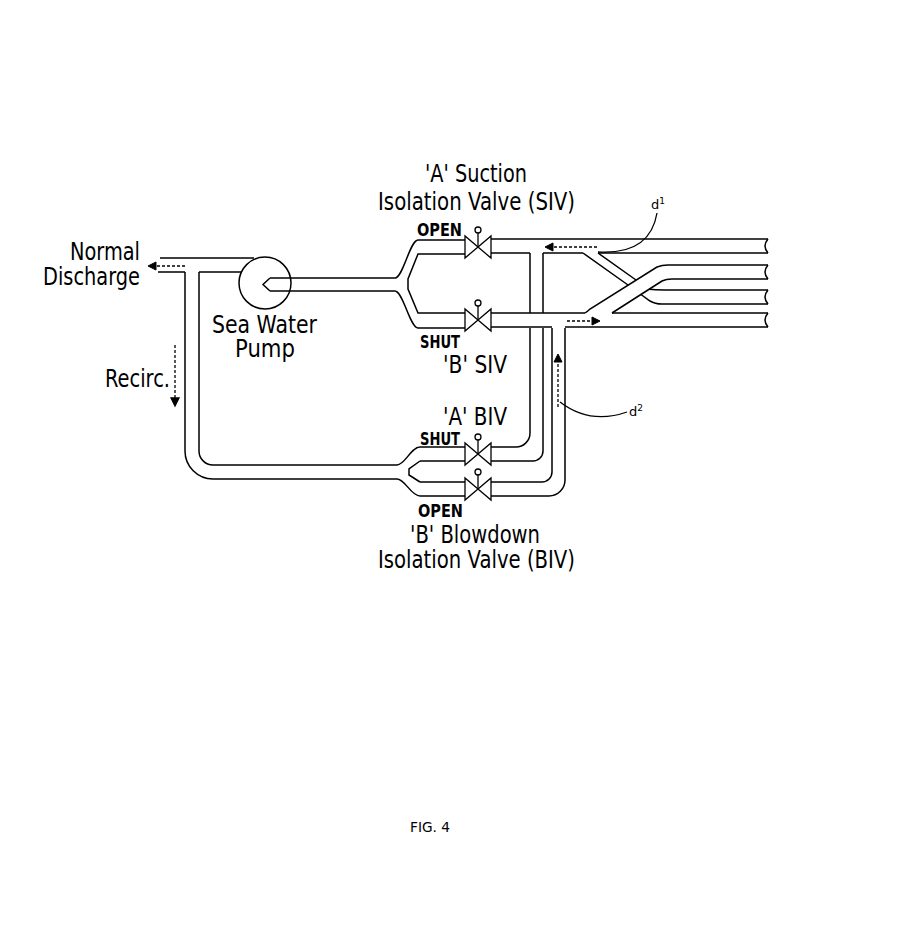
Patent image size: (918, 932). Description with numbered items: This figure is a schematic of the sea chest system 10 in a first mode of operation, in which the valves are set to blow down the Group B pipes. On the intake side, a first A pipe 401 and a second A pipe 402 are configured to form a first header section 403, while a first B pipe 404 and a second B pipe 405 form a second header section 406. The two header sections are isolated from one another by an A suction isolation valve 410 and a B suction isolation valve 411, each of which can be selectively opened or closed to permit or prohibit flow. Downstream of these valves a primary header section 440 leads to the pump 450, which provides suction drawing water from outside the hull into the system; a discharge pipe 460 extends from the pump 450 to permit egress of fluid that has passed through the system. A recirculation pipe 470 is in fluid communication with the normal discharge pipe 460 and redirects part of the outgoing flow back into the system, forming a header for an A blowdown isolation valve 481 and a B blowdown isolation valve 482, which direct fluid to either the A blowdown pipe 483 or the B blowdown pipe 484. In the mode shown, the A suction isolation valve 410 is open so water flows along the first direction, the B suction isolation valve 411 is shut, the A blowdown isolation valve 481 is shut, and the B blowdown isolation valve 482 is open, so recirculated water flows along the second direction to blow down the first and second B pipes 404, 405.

The sea chest system 10 is at (420, 121).
The first A pipe 401 is at (789, 248).
The second A pipe 402 is at (789, 297).
The first header section 403 is at (579, 239).
The first B pipe 404 is at (789, 270).
The second B pipe 405 is at (789, 320).
The second header section 406 is at (570, 328).
The A Suction Isolation Valve 410 is at (473, 253).
The B Suction Isolation Valve 411 is at (473, 312).
The primary header section 440 is at (325, 278).
The pump 450 is at (268, 258).
The discharge pipe 460 is at (163, 257).
The recirculation pipe 470 is at (183, 437).
The A Blowdown Isolation Valve 481 is at (481, 447).
The B Blowdown Isolation Valve 482 is at (472, 497).
The A blowdown pipe 483 is at (528, 372).
The B blowdown pipe 484 is at (567, 448).